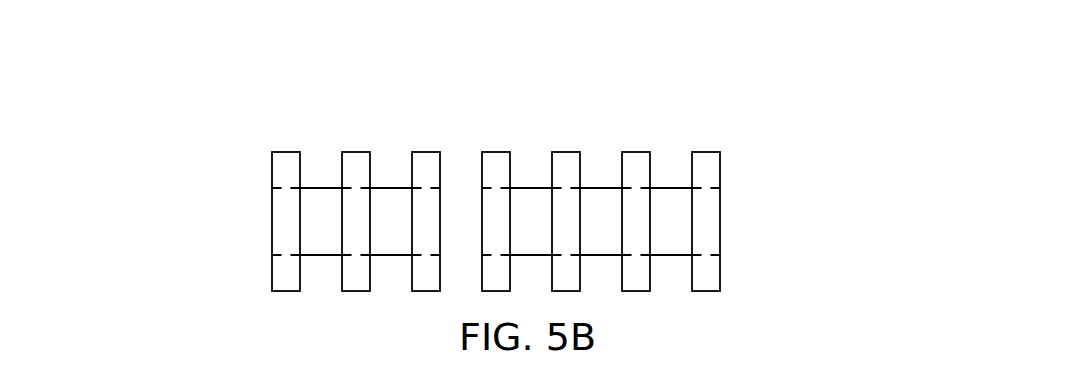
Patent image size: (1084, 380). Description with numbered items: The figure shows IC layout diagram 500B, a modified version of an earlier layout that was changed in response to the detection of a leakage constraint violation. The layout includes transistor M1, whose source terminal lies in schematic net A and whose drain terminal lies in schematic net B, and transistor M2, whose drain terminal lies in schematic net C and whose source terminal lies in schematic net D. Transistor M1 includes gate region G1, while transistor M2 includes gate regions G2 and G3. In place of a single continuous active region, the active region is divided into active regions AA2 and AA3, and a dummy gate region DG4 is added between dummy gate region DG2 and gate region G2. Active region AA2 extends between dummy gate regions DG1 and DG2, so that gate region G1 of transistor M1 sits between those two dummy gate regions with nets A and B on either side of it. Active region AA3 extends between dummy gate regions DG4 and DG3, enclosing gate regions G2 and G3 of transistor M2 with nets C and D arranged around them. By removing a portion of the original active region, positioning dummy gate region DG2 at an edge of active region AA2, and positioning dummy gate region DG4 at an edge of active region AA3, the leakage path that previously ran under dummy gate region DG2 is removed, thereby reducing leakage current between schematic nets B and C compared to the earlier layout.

The IC layout diagram 500B is at (872, 89).
The transistor M1 is at (355, 180).
The transistor M2 is at (603, 179).
The dummy gate region DG1 is at (285, 203).
The gate region G1 is at (356, 203).
The dummy gate region DG2 is at (425, 203).
The dummy gate region DG4 is at (496, 203).
The gate region G2 is at (567, 203).
The gate region G3 is at (637, 203).
The dummy gate region DG3 is at (709, 203).
The active region AA2 is at (235, 232).
The active region AA3 is at (753, 232).
The schematic net A is at (320, 223).
The schematic net B is at (388, 223).
The schematic net C is at (600, 223).
The schematic net D is at (599, 223).